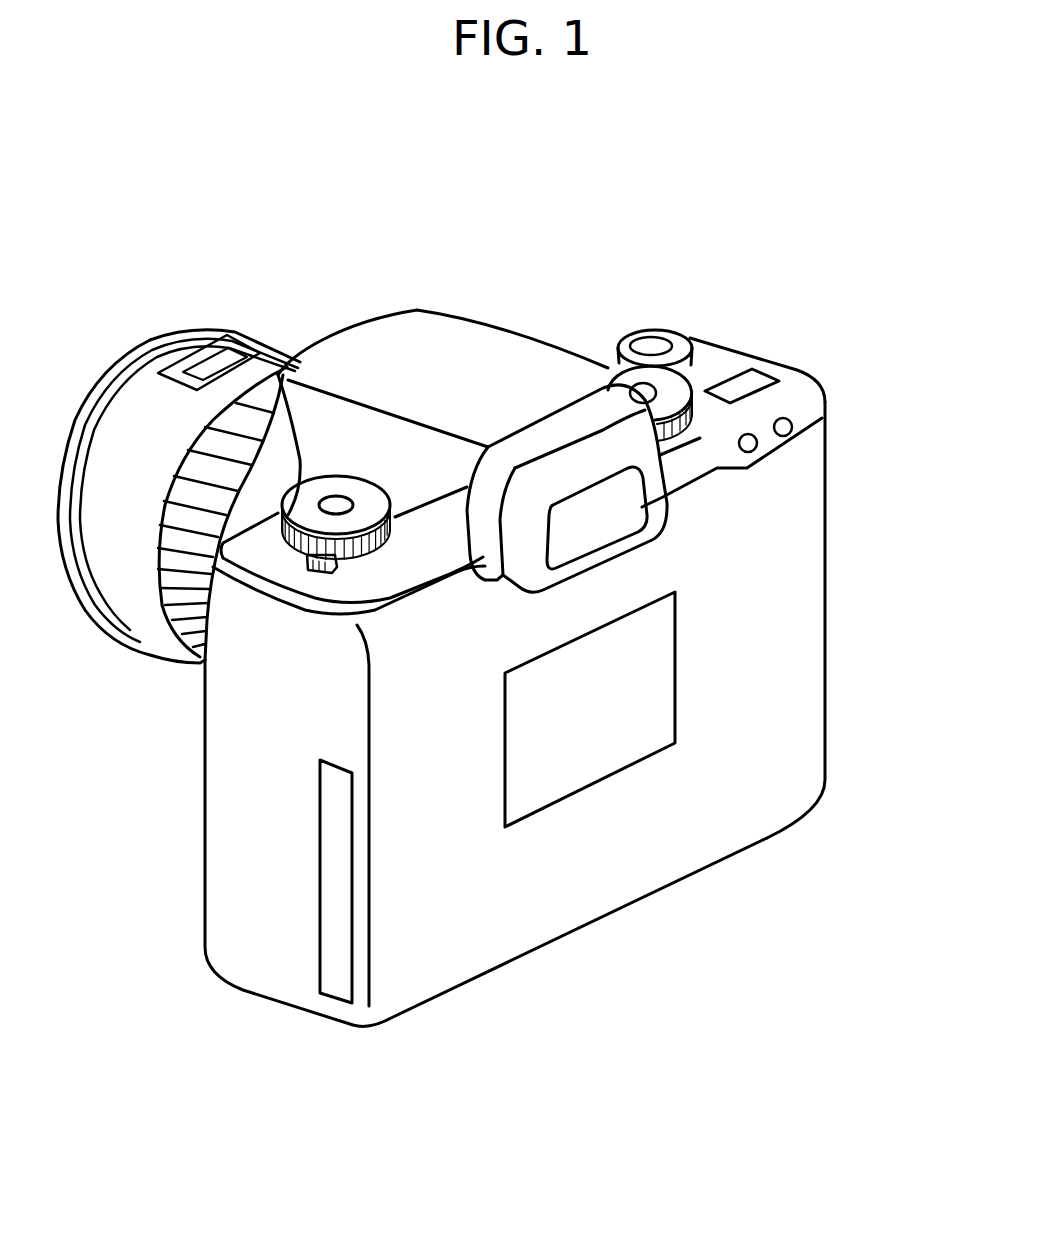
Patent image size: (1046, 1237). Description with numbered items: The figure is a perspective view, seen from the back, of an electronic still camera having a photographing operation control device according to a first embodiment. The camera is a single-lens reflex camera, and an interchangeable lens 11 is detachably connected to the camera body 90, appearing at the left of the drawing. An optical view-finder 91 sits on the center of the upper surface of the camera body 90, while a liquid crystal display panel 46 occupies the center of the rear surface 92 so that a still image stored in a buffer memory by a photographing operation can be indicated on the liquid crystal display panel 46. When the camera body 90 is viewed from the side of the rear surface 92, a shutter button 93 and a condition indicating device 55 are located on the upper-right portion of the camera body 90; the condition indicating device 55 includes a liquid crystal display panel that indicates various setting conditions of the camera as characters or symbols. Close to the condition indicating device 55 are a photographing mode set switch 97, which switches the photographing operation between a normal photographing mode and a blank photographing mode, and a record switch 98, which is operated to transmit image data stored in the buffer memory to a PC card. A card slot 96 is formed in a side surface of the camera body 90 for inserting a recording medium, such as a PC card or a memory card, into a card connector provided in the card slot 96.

The interchangeable lens 11 is at (122, 637).
The liquid crystal display panel 46 is at (595, 730).
The condition indicating device 55 is at (750, 385).
The camera body 90 is at (830, 770).
The optical view-finder 91 is at (620, 517).
The rear surface 92 is at (768, 673).
The shutter button 93 is at (648, 345).
The card slot 96 is at (337, 927).
The photographing mode set switch 97 is at (783, 427).
The record switch 98 is at (748, 443).